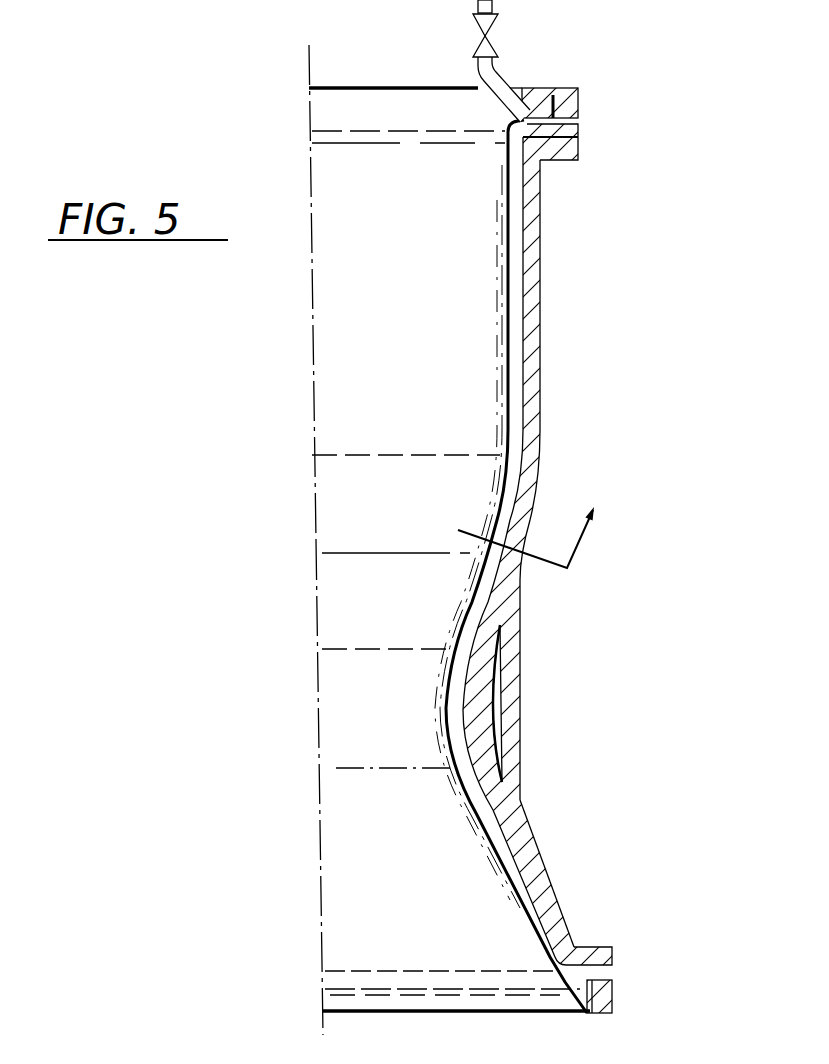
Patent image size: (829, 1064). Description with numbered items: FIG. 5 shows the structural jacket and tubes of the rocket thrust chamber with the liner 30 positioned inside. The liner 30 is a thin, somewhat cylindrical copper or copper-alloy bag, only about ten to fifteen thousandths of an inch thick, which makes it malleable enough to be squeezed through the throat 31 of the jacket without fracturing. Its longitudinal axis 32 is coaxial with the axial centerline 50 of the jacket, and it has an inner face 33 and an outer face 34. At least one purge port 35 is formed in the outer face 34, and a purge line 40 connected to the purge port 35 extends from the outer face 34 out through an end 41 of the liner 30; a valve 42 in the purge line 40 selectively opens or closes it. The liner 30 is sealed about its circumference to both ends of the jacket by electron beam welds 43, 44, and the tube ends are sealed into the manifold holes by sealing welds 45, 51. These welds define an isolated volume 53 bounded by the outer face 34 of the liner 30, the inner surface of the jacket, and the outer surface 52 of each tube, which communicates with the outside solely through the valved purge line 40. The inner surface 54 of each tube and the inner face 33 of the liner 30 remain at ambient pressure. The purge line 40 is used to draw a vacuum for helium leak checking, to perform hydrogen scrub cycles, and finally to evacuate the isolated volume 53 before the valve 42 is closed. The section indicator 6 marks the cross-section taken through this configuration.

The section line 6- 6 is at (539, 537).
The liner 30 is at (427, 285).
The throat 31 is at (472, 726).
The longitudinal axis 32 is at (316, 510).
The inner face 33 is at (488, 864).
The outer face 34 is at (512, 868).
The purge port 35 is at (511, 151).
The purge line 40 is at (509, 74).
The end of the liner 41 is at (362, 86).
The valve 42 is at (473, 47).
The electron beam weld 43 is at (590, 1013).
The electron beam weld 44 is at (556, 92).
The sealing weld 45 is at (567, 150).
The axial centerline 50 is at (316, 390).
The sealing weld 51 is at (612, 962).
The outer surface of the tube 52 is at (513, 350).
The isolated volume 53 is at (505, 457).
The inner surface of the tube 54 is at (596, 975).